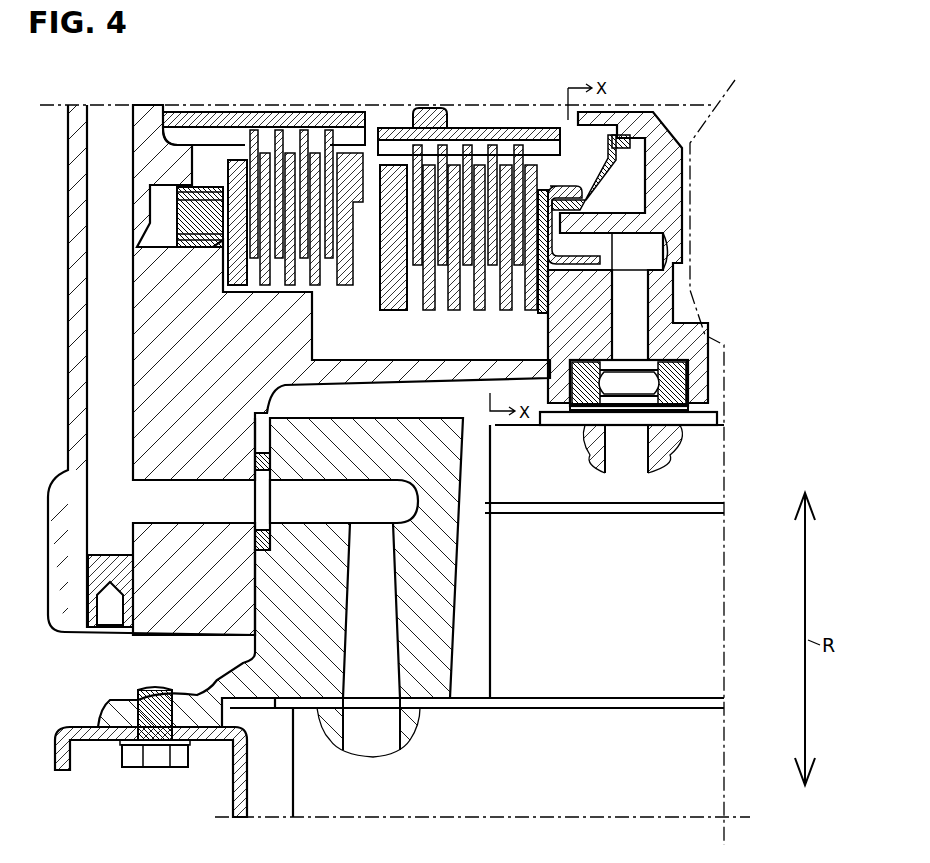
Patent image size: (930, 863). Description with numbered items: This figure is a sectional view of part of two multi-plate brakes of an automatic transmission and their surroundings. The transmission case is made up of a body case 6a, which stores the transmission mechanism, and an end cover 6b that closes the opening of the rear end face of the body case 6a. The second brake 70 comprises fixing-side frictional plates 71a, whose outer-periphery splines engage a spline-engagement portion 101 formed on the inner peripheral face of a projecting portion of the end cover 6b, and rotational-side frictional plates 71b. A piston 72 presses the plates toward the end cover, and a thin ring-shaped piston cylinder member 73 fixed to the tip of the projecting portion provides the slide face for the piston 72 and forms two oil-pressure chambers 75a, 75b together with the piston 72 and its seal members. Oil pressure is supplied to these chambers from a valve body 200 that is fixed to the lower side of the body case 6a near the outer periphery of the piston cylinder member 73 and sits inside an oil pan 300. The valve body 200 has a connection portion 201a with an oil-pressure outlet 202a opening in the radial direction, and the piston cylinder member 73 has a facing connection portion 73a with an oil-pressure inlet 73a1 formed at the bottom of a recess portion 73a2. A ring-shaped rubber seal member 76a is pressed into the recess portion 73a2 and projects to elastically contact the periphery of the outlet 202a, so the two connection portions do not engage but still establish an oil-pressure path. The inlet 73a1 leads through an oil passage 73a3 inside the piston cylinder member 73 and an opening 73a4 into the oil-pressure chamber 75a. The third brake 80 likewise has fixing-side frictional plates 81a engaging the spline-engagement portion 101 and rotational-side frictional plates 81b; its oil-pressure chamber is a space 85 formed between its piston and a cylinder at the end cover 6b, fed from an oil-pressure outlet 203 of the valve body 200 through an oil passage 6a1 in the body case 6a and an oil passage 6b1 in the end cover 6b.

The body case 6a is at (280, 587).
The oil passage 6a1 is at (344, 501).
The end cover 6b is at (299, 370).
The oil passage 6b1 is at (114, 553).
The second brake 70 is at (533, 178).
The fixing-side frictional plates 71a is at (452, 308).
The rotational-side frictional plates 71b is at (497, 128).
The piston 72 is at (610, 186).
The piston cylinder member 73 is at (662, 265).
The connection portion 73a is at (703, 380).
The oil-pressure inlet 73a1 is at (643, 357).
The recess portion 73a2 is at (690, 368).
The oil passage 73a3 is at (632, 293).
The opening 73a4 is at (640, 251).
The oil-pressure chamber 75a is at (505, 308).
The oil-pressure chamber 75b is at (637, 148).
The rubber seal member 76a is at (685, 405).
The third brake 80 is at (264, 163).
The fixing-side frictional plates 81a is at (318, 284).
The rotational-side frictional plates 81b is at (322, 108).
The space 85 is at (150, 233).
The spline-engagement portion 101 is at (431, 333).
The valve body 200 is at (515, 614).
The connection portion 201a is at (707, 423).
The oil-pressure outlet 202a is at (630, 420).
The oil-pressure outlet 203 is at (368, 727).
The oil pan 300 is at (83, 727).